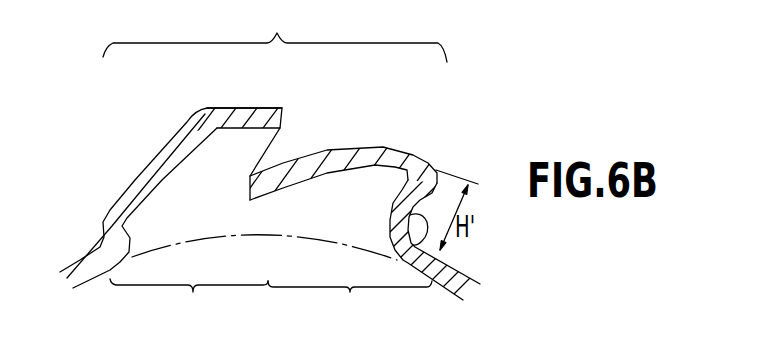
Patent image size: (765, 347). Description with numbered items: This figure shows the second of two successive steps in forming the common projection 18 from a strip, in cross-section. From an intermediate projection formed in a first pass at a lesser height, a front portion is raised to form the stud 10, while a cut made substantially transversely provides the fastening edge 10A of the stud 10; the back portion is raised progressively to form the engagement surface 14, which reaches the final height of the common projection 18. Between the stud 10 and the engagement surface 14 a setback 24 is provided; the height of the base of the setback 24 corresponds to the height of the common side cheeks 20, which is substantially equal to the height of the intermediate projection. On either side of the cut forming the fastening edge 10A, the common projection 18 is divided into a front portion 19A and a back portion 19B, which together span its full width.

The common projection 18 is at (275, 32).
The stud 10 is at (189, 125).
The fastening edge 10A is at (281, 118).
The setback 24 is at (300, 157).
The engagement surface 14 is at (401, 261).
The common side cheeks 20 is at (255, 215).
The front portion 19A is at (189, 301).
The back portion 19B is at (350, 303).